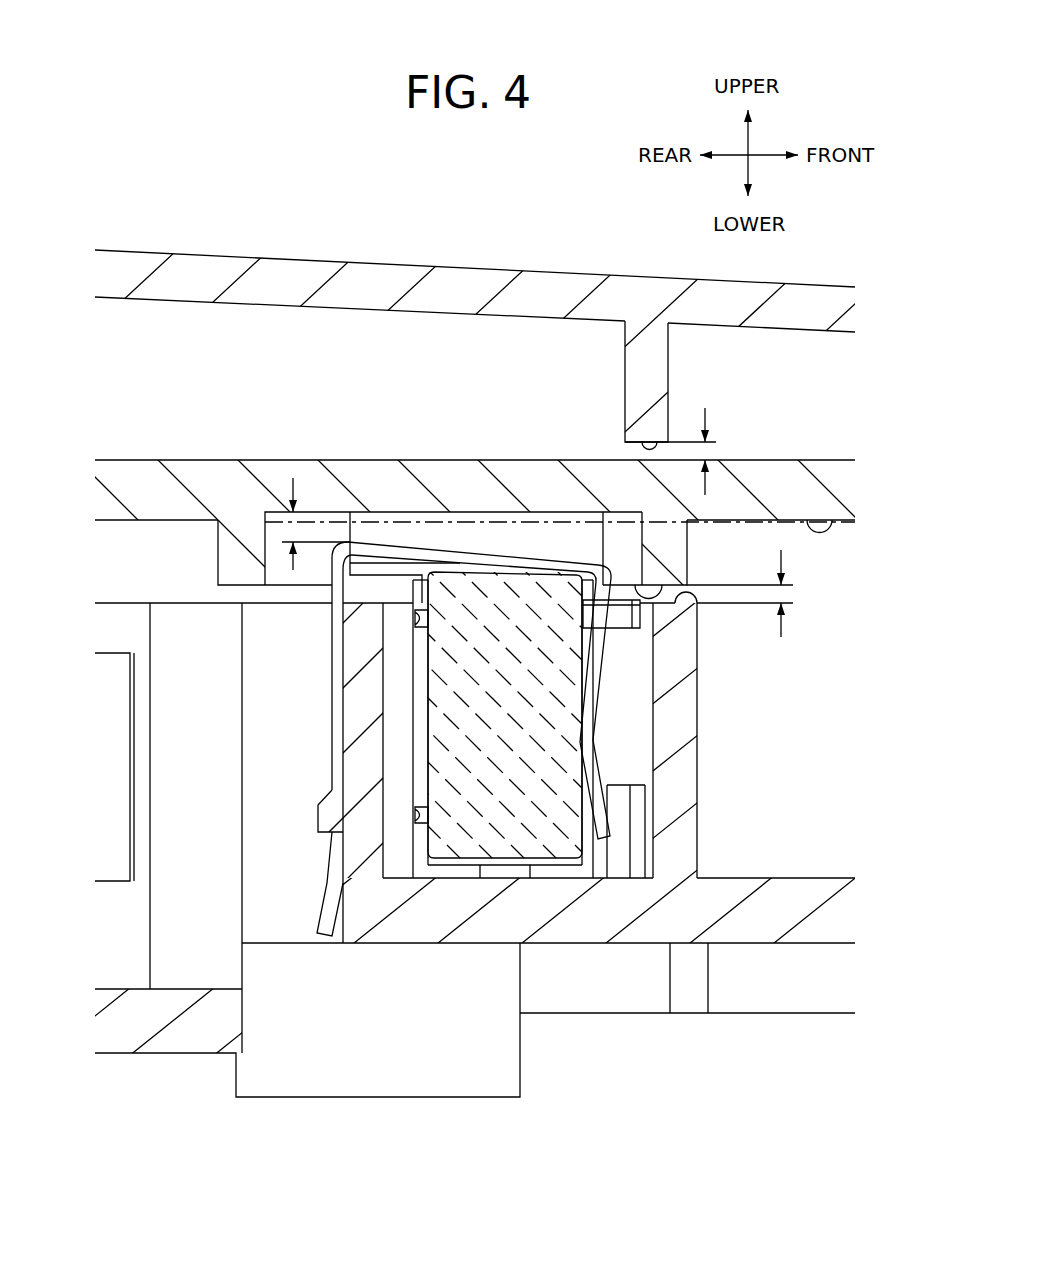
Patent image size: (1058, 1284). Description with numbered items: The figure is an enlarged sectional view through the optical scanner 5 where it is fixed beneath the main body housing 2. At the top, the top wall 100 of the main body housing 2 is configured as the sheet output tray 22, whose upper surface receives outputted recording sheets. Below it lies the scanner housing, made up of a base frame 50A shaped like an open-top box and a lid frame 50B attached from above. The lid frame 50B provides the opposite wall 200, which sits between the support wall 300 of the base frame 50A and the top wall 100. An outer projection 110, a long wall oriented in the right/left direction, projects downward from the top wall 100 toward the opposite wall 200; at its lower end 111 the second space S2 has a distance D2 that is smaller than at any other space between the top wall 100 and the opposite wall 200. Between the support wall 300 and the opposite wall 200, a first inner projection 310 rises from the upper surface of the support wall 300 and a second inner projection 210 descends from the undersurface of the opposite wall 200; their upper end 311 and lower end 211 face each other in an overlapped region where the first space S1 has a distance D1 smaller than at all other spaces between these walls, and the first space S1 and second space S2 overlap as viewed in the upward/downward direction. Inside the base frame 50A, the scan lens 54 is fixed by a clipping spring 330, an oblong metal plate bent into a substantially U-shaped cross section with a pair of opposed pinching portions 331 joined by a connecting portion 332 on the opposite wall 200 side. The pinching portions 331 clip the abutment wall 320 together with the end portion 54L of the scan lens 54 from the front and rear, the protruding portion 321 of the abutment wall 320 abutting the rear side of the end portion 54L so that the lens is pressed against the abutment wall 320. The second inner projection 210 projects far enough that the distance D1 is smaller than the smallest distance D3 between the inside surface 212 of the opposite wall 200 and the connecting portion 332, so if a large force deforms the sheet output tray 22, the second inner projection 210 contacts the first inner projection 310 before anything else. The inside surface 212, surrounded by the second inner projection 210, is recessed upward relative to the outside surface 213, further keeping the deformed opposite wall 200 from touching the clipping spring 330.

The sheet output tray 22 is at (282, 259).
The top wall 100 is at (529, 319).
The main body housing 2 is at (529, 319).
The outer projection 110 is at (622, 355).
The lower end 111 is at (660, 440).
The opposite wall 200 is at (509, 487).
The lid frame 50B is at (509, 487).
The second inner projection 210 is at (692, 547).
The lower end 211 is at (640, 584).
The inside surface 212 is at (486, 526).
The outside surface 213 is at (830, 517).
The optical scanner 5 is at (372, 448).
The clipping spring 330 is at (471, 672).
The pinching portions 331 is at (333, 686).
The connecting portion 332 is at (430, 550).
The protruding portion 321 is at (395, 798).
The abutment wall 320 is at (341, 720).
The first inner projection 310 is at (529, 825).
The upper end 311 is at (695, 612).
The end portion of the scan lens 54L is at (540, 825).
The scan lens 54 is at (493, 815).
The support wall 300 is at (750, 910).
The base frame 50A is at (529, 843).
The distance D1 is at (804, 593).
The distance D2 is at (710, 451).
The smallest distance D3 is at (316, 524).
The first space S1 is at (702, 592).
The second space S2 is at (623, 448).